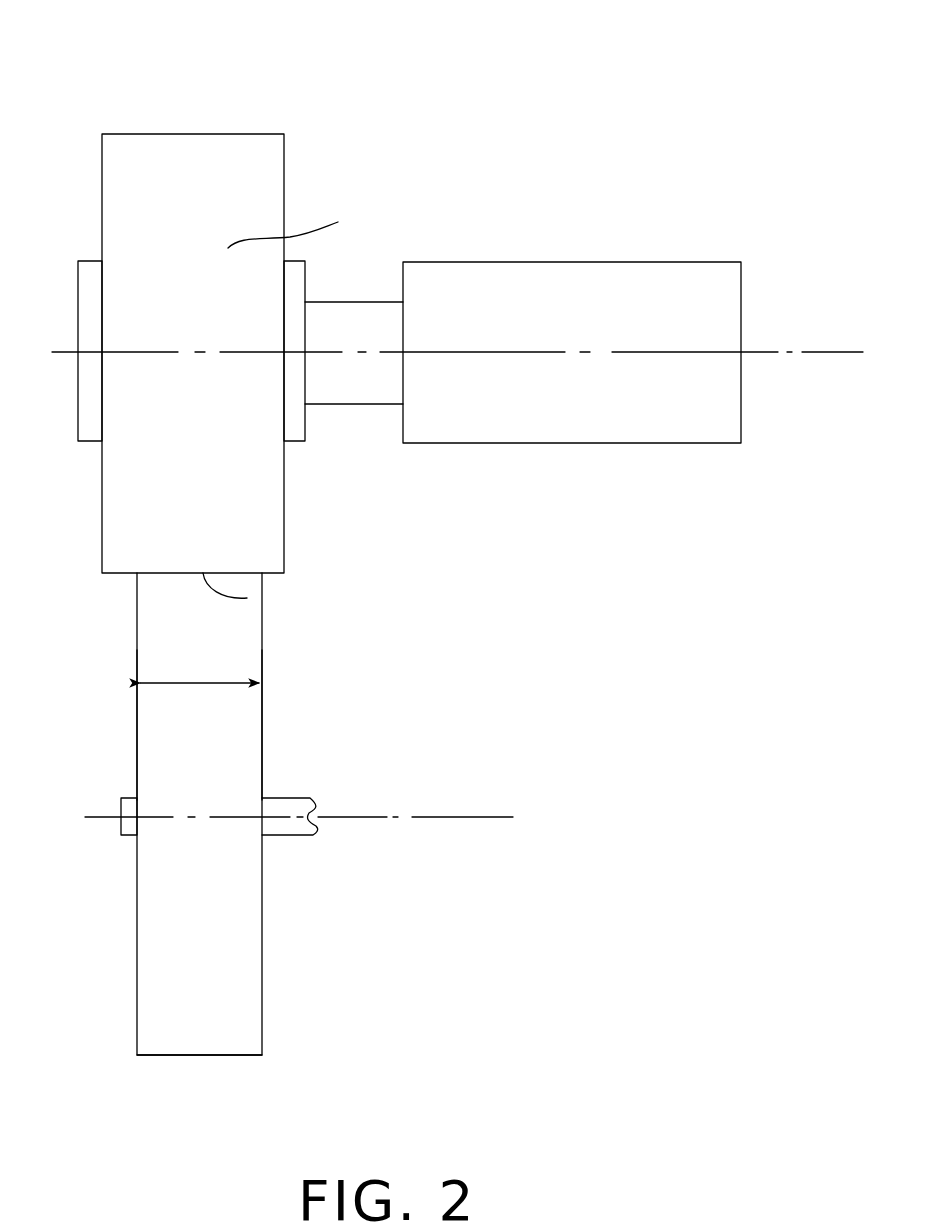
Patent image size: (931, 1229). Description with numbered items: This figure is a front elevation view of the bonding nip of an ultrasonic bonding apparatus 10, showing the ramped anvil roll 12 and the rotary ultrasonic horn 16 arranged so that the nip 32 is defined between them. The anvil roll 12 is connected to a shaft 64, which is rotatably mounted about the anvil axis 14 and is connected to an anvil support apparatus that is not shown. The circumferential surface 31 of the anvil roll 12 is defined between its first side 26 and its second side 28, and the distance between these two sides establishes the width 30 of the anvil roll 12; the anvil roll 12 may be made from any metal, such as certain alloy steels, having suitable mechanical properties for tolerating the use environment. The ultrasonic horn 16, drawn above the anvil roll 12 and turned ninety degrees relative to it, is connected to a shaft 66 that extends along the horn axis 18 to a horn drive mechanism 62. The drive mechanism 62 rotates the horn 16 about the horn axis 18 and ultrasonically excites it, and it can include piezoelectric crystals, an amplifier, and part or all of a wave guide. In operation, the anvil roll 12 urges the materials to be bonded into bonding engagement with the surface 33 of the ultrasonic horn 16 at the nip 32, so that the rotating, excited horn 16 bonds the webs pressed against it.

The ultrasonic bonding apparatus 10 is at (76, 60).
The anvil roll 12 is at (265, 952).
The anvil axis 14 is at (490, 817).
The ultrasonic horn 16 is at (287, 161).
The horn axis 18 is at (820, 352).
The first side 26 is at (137, 715).
The second side 28 is at (262, 720).
The width 30 is at (203, 683).
The surface 31 is at (238, 1049).
The nip 32 is at (247, 598).
The surface 33 is at (302, 227).
The horn drive mechanism 62 is at (628, 262).
The shaft 64 is at (297, 798).
The shaft 66 is at (346, 404).